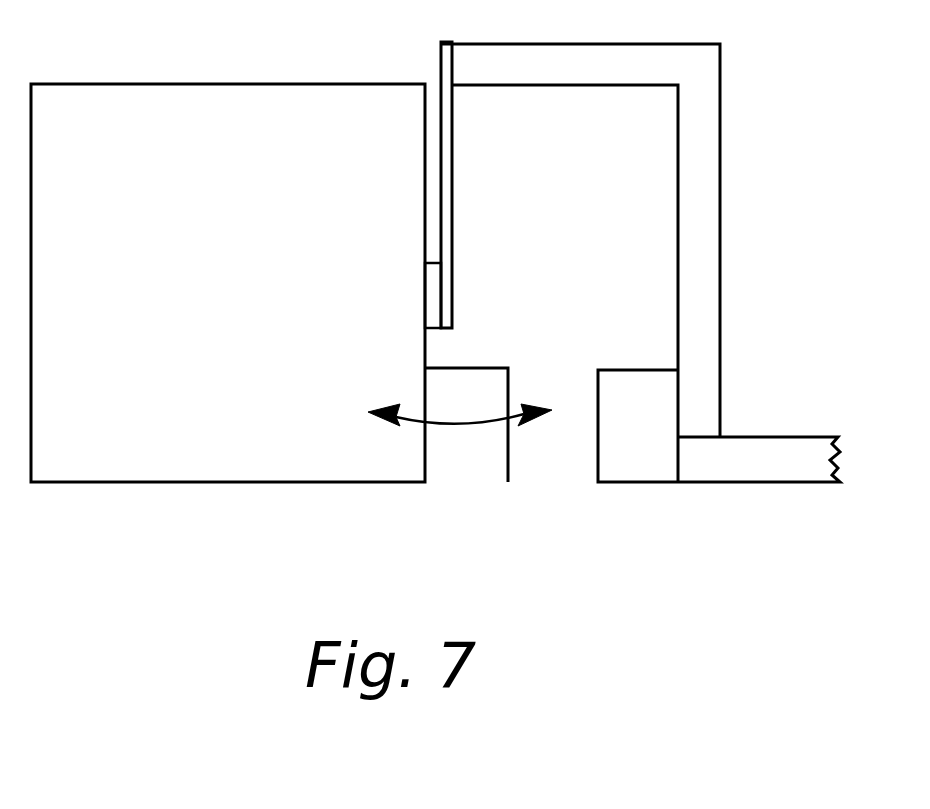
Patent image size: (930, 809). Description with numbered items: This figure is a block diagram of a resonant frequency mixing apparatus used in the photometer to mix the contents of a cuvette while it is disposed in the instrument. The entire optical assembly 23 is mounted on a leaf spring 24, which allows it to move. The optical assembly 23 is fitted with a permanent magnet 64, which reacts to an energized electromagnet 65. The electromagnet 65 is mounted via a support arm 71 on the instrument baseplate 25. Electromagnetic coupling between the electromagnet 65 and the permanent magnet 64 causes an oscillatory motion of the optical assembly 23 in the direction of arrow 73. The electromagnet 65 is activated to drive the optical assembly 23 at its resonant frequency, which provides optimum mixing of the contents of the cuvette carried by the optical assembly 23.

The optical assembly 23 is at (238, 281).
The leaf spring 24 is at (453, 188).
The support arm 71 is at (722, 130).
The permanent magnet 64 is at (467, 477).
The electromagnet 65 is at (640, 473).
The instrument baseplate 25 is at (795, 473).
The arrow 73 is at (497, 418).